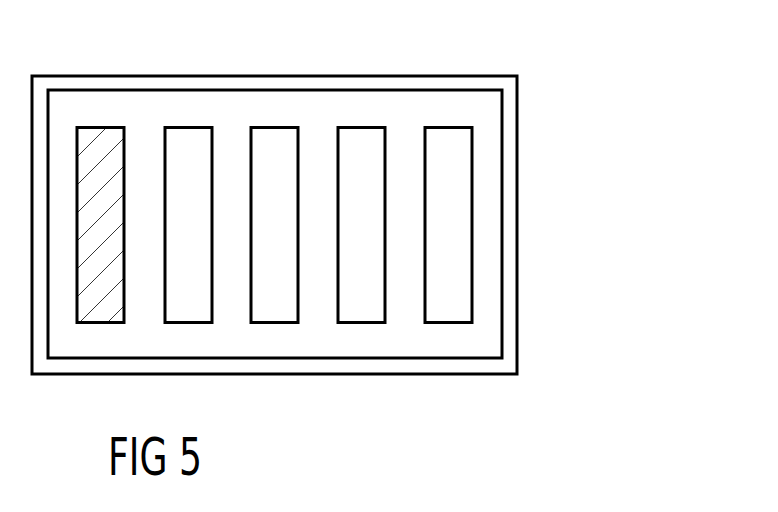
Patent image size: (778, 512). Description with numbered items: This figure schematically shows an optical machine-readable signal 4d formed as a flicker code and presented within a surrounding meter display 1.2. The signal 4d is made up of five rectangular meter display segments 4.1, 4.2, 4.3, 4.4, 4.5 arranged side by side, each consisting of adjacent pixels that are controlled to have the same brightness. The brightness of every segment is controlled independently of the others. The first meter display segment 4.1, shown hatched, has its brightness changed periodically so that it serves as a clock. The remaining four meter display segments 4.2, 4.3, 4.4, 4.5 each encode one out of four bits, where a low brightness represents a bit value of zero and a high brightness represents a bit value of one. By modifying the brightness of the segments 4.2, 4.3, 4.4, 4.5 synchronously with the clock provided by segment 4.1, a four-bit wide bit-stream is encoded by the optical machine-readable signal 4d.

The battery module housing 1.2 is at (536, 163).
The optical machine-readable signal 4d is at (484, 230).
The meter display segment 4.1 is at (101, 149).
The meter display segment 4.2 is at (186, 149).
The meter display segment 4.3 is at (275, 149).
The meter display segment 4.4 is at (362, 149).
The meter display segment 4.5 is at (447, 149).